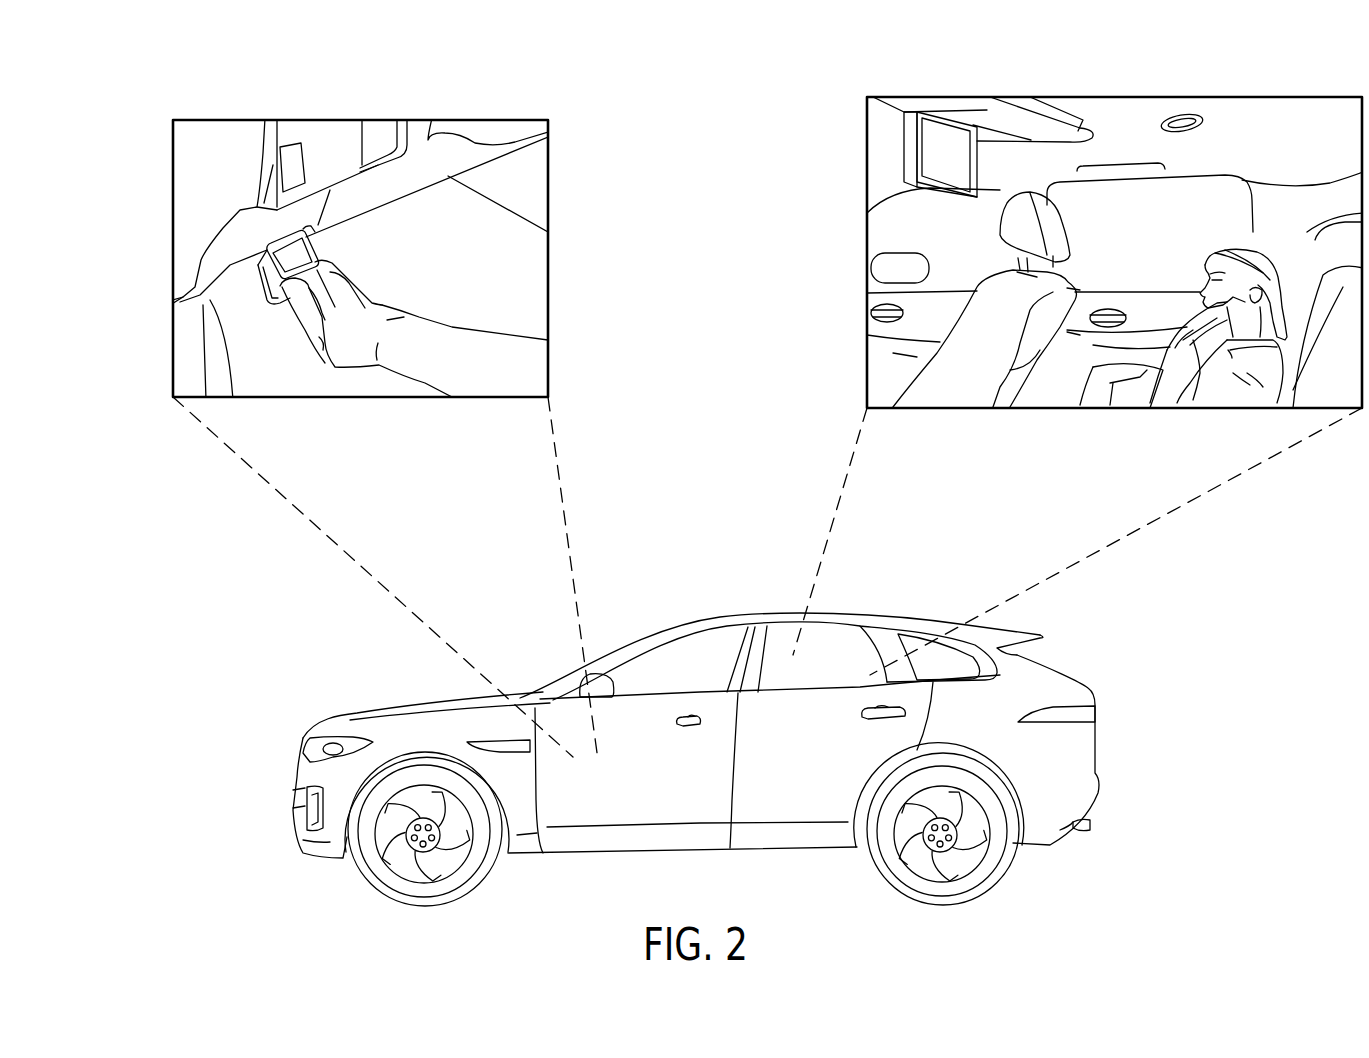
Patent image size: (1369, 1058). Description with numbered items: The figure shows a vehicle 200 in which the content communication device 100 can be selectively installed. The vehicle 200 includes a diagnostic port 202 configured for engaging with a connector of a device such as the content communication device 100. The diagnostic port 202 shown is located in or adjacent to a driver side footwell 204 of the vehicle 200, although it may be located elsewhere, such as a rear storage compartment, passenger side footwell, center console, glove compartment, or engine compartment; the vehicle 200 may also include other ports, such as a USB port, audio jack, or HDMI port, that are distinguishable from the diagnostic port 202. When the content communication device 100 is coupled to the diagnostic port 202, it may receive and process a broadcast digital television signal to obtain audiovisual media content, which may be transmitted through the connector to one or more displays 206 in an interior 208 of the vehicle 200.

The content communication device 100 is at (307, 252).
The vehicle 200 is at (1180, 638).
The diagnostic port 202 is at (255, 238).
The driver side footwell 204 is at (263, 110).
The displays 206 is at (951, 144).
The interior 208 is at (1267, 92).